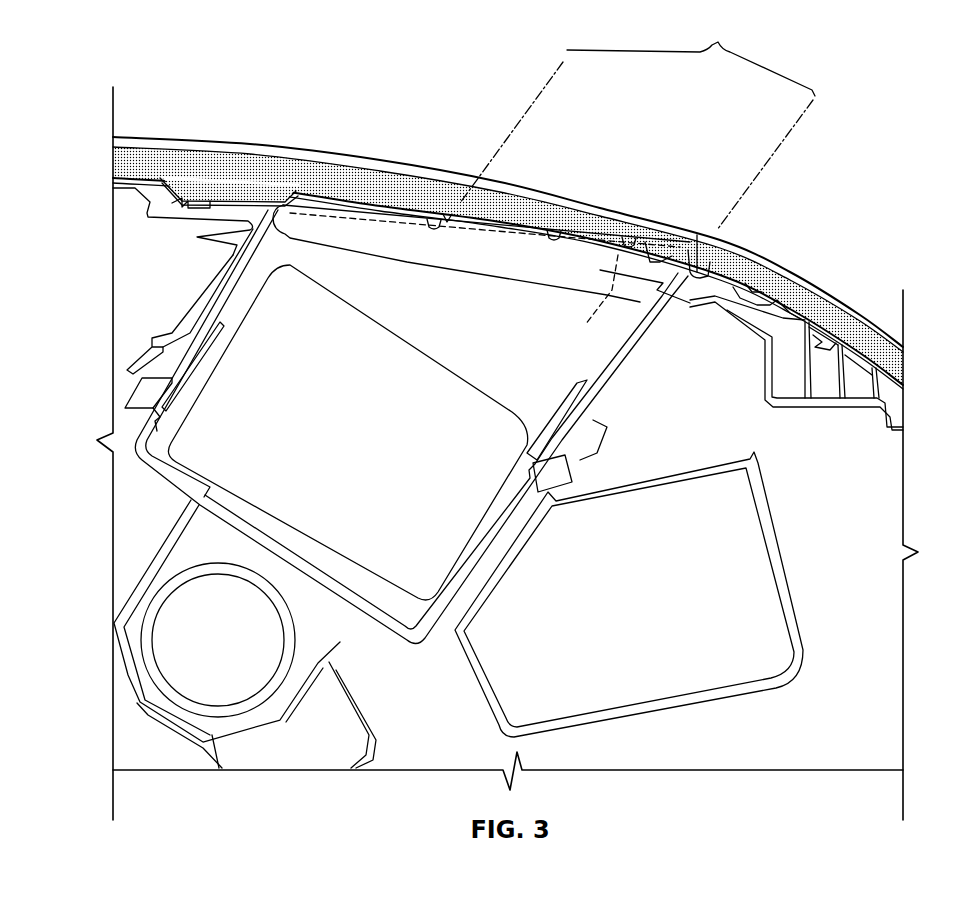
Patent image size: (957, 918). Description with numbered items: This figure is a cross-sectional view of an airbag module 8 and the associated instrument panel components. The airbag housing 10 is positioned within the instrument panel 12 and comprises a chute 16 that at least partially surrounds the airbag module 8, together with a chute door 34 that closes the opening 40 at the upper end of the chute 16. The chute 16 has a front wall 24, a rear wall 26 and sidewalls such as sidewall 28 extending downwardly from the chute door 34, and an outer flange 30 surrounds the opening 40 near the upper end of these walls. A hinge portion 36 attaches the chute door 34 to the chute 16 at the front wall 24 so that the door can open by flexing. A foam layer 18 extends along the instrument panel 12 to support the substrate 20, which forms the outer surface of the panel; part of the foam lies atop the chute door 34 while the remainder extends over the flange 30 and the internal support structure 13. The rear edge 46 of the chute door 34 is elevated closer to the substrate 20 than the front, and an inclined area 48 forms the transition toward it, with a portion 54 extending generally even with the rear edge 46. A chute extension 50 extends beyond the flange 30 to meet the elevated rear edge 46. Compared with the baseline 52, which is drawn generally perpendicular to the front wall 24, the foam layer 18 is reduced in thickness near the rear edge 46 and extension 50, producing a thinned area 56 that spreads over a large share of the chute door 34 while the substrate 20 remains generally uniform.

The airbag module 8 is at (228, 457).
The airbag housing 10 is at (188, 250).
The instrument panel 12 is at (508, 225).
The internal support structure 13 is at (168, 196).
The chute 16 is at (615, 344).
The foam layer 18 is at (345, 186).
The substrate 20 is at (415, 168).
The front wall 24 is at (185, 325).
The rear wall 26 is at (590, 436).
The sidewall 28 is at (411, 427).
The outer flange 30 is at (230, 204).
The chute door 34 is at (447, 226).
The hinge portion 36 is at (285, 200).
The opening 40 is at (462, 274).
The rear edge 46 is at (688, 250).
The inclined area 48 is at (506, 222).
The chute extension 50 is at (700, 250).
The baseline 52 is at (593, 302).
The portion 54 is at (648, 240).
The thinned area 56 is at (637, 131).